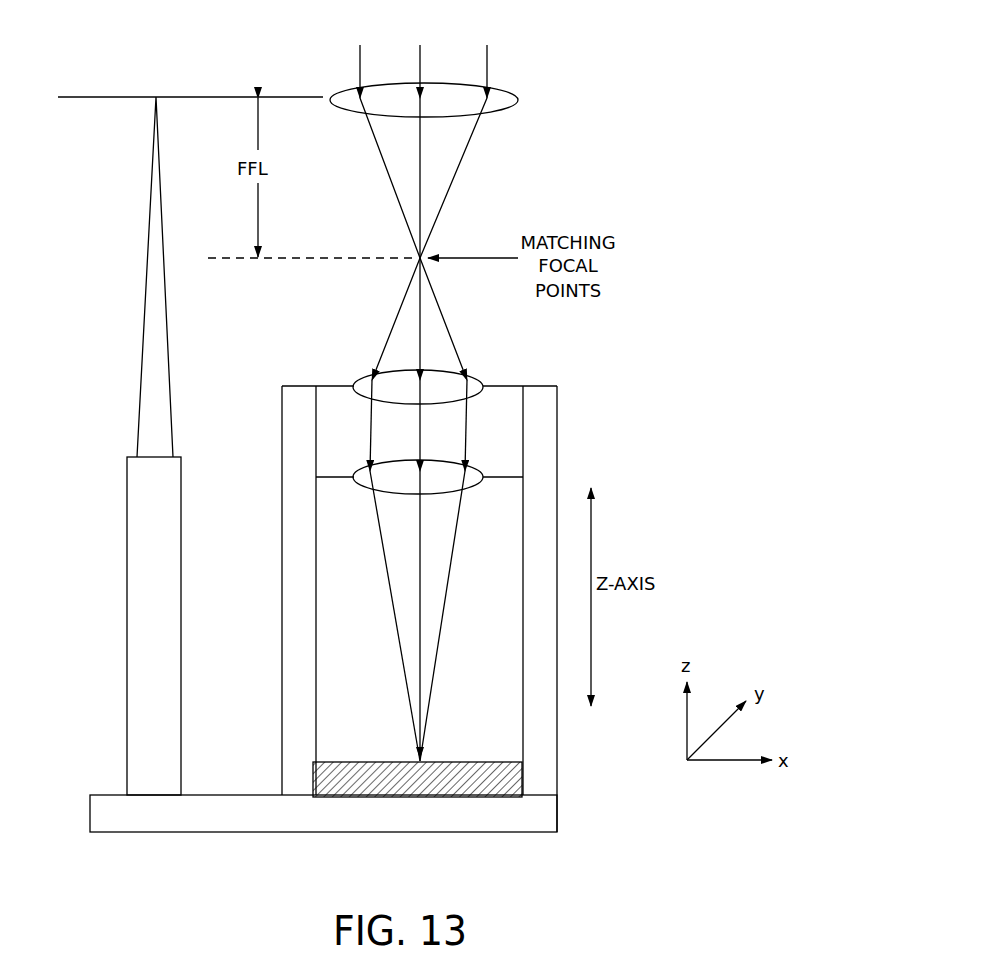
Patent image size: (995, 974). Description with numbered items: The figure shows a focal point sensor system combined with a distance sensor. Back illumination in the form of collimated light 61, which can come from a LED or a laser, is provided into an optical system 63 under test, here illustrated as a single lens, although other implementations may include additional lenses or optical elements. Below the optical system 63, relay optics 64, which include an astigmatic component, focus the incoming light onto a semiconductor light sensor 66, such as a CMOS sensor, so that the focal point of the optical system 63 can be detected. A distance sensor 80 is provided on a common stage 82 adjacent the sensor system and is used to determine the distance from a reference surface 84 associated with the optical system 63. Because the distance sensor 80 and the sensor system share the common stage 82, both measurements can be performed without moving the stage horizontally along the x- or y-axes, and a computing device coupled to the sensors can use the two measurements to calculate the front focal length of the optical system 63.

The collimated light 61 is at (497, 52).
The optical system 63 is at (519, 100).
The relay optics 64 is at (527, 430).
The semiconductor light sensor 66 is at (526, 781).
The distance sensor 80 is at (125, 586).
The common stage 82 is at (105, 834).
The reference surface 84 is at (205, 95).